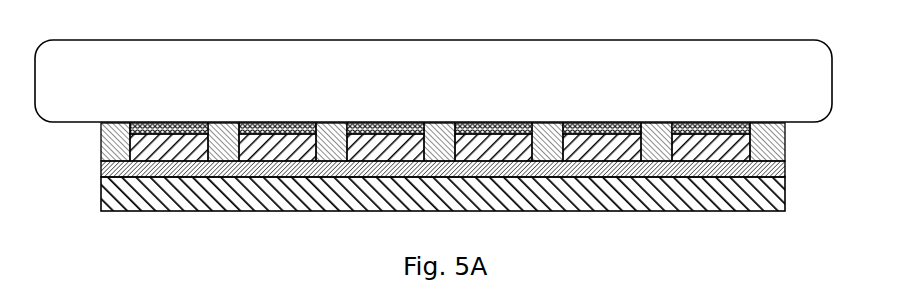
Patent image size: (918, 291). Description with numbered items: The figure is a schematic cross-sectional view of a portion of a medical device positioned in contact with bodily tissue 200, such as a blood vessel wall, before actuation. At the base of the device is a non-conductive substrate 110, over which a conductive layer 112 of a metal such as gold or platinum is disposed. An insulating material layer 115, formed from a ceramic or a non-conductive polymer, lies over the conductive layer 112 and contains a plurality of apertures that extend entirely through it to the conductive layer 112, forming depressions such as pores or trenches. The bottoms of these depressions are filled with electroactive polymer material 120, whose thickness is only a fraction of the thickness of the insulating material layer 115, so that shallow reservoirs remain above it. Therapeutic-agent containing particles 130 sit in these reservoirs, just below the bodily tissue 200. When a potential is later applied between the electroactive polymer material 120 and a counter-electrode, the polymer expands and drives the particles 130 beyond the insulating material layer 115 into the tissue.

The bodily tissue 200 is at (436, 84).
The substrate 110 is at (505, 197).
The conductive layer 112 is at (265, 168).
The insulating material layer 115 is at (123, 148).
The electroactive polymer material 120 is at (200, 150).
The therapeutic-agent containing particles 130 is at (155, 150).